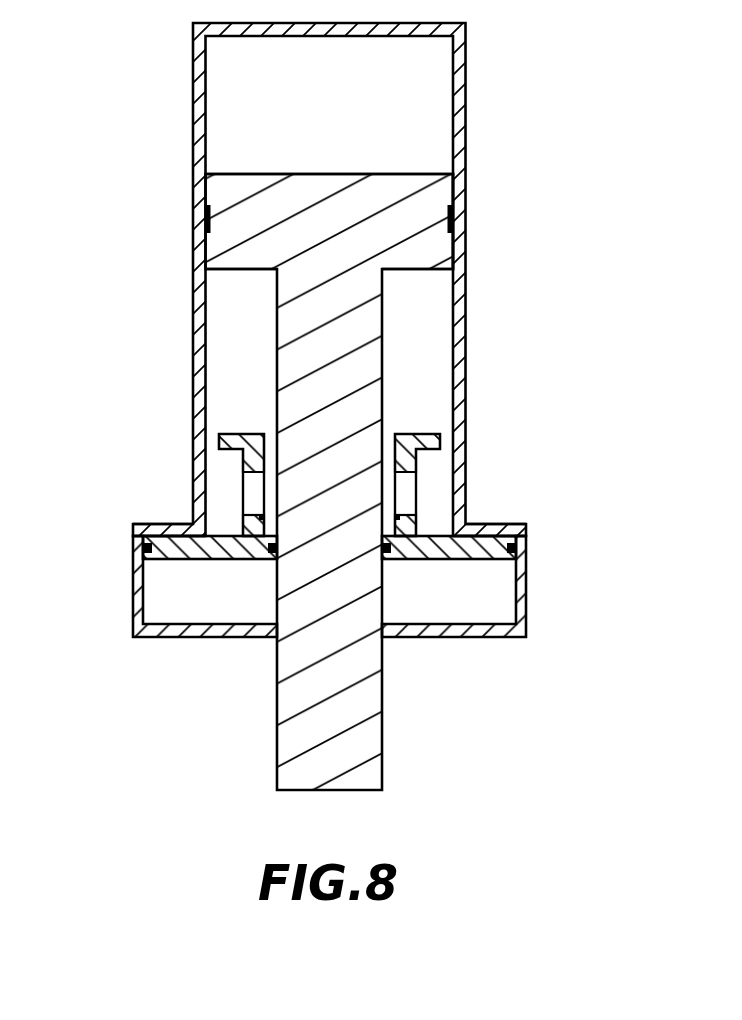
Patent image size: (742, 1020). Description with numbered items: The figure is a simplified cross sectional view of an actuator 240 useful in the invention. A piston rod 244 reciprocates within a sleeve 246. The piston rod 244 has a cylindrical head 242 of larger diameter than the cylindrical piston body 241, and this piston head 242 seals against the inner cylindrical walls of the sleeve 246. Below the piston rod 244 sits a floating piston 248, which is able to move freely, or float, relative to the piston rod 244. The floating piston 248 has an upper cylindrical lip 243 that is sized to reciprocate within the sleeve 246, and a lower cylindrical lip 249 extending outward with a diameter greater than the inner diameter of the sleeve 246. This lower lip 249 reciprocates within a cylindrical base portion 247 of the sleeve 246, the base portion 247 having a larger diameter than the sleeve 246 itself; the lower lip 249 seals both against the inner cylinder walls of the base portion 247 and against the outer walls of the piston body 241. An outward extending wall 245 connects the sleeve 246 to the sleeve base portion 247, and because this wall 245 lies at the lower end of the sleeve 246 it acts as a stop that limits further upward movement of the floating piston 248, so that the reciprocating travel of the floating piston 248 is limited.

The actuator assembly 240 is at (614, 207).
The cylindrical piston body 241 is at (367, 363).
The cylindrical head 242 is at (433, 247).
The upper cylindrical lip 243 is at (435, 438).
The piston rod 244 is at (426, 327).
The outward extending wall 245 is at (162, 528).
The sleeve 246 is at (460, 78).
The cylindrical base portion 247 is at (540, 602).
The floating piston 248 is at (436, 473).
The lower cylindrical lip 249 is at (170, 557).